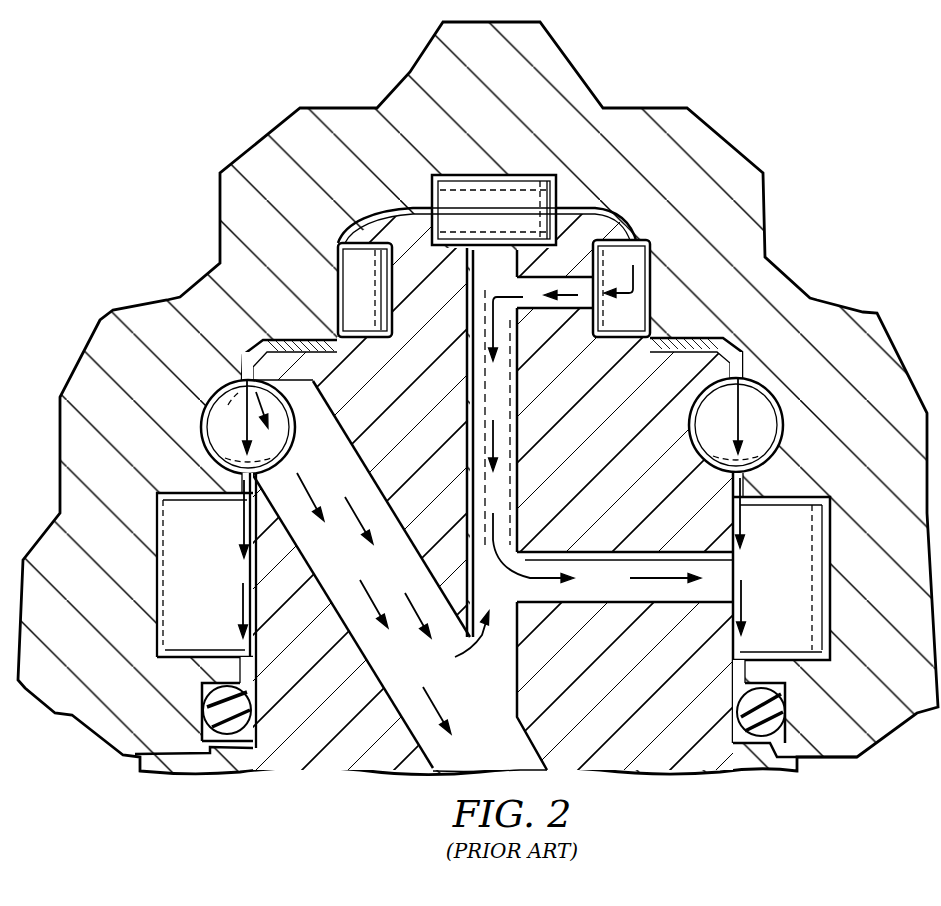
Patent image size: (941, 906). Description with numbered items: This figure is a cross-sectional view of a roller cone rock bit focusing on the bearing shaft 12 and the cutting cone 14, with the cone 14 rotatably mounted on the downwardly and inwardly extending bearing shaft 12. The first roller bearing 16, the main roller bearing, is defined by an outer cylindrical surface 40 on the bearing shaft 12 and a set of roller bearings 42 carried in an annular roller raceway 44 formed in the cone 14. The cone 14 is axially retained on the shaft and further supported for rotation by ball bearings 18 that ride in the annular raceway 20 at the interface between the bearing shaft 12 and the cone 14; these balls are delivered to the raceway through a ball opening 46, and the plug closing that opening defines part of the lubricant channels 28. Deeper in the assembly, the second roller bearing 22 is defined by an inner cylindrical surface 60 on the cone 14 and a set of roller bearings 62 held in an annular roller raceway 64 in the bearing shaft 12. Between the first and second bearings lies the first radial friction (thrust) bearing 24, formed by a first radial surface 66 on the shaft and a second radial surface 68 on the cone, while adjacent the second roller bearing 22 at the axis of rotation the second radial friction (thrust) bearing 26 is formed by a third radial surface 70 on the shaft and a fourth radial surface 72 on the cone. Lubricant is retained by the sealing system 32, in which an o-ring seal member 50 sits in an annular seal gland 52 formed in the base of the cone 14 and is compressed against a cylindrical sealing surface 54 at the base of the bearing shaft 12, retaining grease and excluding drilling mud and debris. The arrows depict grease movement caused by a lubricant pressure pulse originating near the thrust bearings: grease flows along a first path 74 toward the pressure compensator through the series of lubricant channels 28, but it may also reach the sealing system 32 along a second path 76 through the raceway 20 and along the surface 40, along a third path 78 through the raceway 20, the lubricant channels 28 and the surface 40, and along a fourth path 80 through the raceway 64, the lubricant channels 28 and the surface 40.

The bearing shaft 12 is at (320, 682).
The cutting cone 14 is at (645, 88).
The first roller bearing 16 is at (817, 608).
The ball bearings 18 is at (752, 395).
The annular raceway 20 is at (776, 437).
The second roller bearing 22 is at (663, 277).
The first radial friction (thrust) bearing 24 is at (698, 322).
The second radial friction (thrust) bearing 26 is at (462, 160).
The lubricant channels 28 is at (343, 470).
The sealing system 32 is at (772, 681).
The outer cylindrical surface 40 is at (745, 537).
The roller bearings 42 is at (800, 550).
The annular roller raceway 44 is at (831, 592).
The ball opening 46 is at (407, 727).
The o-ring seal member 50 is at (770, 722).
The seal gland 52 is at (764, 685).
The cylindrical sealing surface 54 is at (735, 694).
The inner cylindrical surface 60 is at (340, 292).
The roller bearings 62 is at (392, 318).
The annular roller raceway 64 is at (392, 285).
The first radial surface 66 is at (275, 334).
The second radial surface 68 is at (318, 362).
The third radial surface 70 is at (505, 215).
The fourth radial surface 72 is at (520, 212).
The first path 74 is at (447, 710).
The second path 76 is at (240, 536).
The third path 78 is at (488, 640).
The fourth path 80 is at (522, 448).